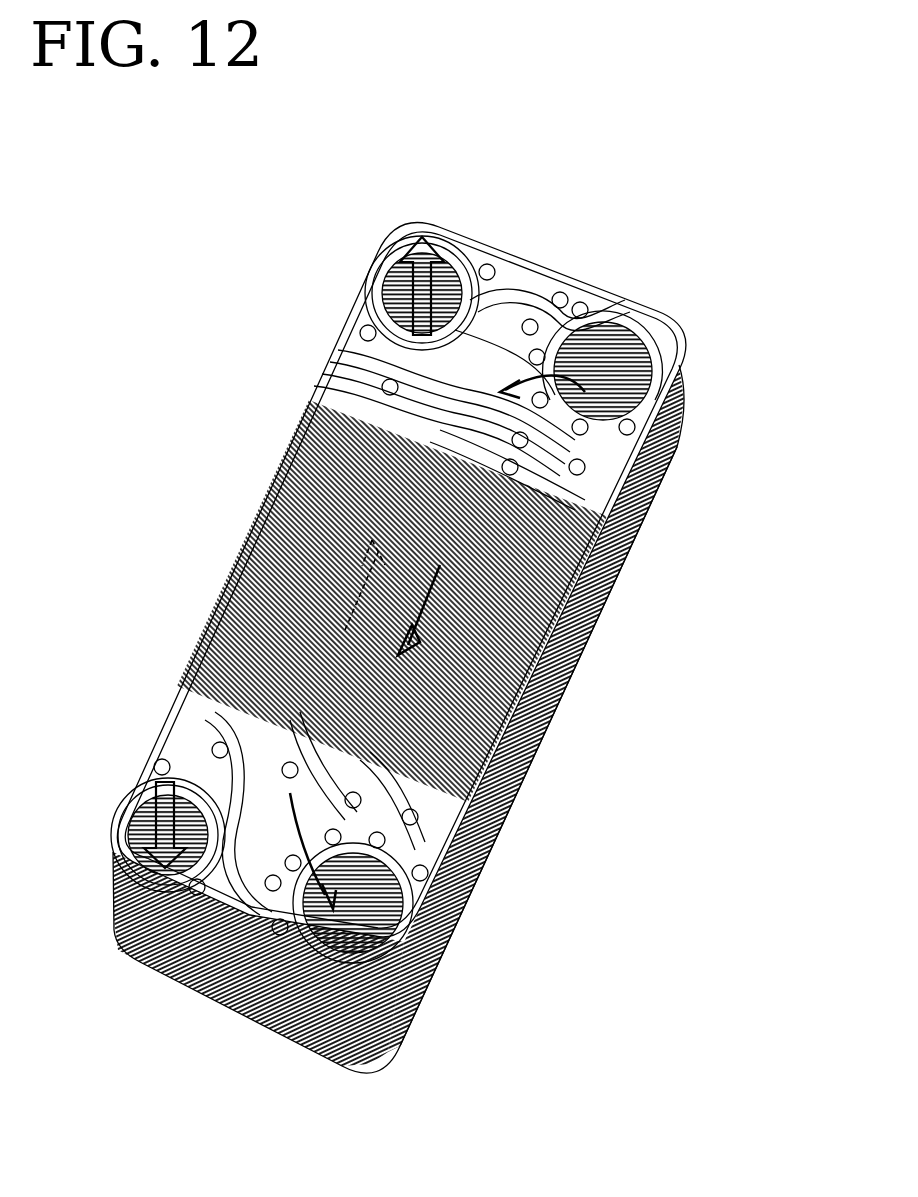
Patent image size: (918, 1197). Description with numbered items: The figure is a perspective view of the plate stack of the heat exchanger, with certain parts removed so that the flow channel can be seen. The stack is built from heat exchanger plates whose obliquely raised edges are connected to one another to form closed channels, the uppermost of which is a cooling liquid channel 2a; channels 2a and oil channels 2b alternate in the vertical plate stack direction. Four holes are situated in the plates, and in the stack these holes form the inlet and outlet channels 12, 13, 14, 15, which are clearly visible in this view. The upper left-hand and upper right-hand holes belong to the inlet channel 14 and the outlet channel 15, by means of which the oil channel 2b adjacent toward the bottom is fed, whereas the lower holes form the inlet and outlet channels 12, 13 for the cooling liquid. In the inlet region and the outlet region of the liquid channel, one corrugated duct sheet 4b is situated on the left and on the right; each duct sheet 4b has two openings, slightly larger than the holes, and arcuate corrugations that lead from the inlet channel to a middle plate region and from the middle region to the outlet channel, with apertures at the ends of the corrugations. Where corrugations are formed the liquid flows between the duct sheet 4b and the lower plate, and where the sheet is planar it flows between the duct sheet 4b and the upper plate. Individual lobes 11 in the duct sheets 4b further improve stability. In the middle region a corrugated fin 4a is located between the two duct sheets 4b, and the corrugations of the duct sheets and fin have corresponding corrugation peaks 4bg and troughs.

The cooling liquid channel 2a is at (657, 306).
The oil channel 2b is at (677, 345).
The corrugated fin 4a is at (570, 713).
The corrugated duct sheet 4b is at (368, 317).
The corrugation peak 4bg is at (325, 347).
The lobe 11 is at (486, 262).
The inlet channel for cooling liquid 12 is at (677, 473).
The outlet channel for cooling liquid 13 is at (458, 898).
The inlet channel 14 is at (190, 790).
The outlet channel 15 is at (383, 247).